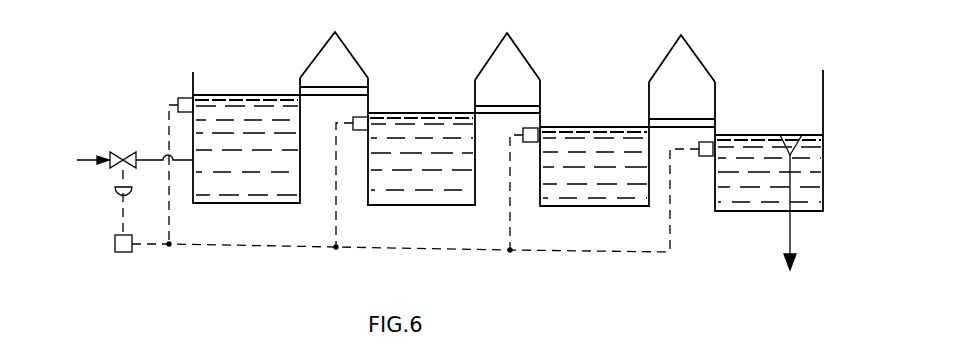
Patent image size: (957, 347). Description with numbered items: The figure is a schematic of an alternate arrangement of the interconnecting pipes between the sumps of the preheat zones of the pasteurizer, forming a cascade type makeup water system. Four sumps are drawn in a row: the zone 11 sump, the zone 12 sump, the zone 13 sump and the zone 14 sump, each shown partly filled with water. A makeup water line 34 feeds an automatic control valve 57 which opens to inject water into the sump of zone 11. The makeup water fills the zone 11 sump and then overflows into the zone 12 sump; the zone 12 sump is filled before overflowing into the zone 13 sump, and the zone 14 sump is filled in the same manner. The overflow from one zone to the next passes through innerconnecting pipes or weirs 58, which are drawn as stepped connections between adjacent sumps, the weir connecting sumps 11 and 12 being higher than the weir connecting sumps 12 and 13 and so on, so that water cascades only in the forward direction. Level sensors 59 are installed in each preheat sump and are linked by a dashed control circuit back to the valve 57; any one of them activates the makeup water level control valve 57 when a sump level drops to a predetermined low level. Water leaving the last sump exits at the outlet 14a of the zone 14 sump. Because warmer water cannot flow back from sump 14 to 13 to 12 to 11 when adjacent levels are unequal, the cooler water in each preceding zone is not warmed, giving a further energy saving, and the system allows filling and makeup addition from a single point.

The makeup water line 34 is at (86, 160).
The automatic control valve 57 is at (133, 152).
The innerconnecting pipes or weirs 58 is at (357, 87).
The level sensors 59 is at (184, 97).
The zone 11 sump 11 is at (257, 193).
The zone 12 sump 12 is at (427, 183).
The zone 13 sump 13 is at (598, 190).
The zone 14 sump 14 is at (753, 200).
The outlet 14a is at (803, 122).